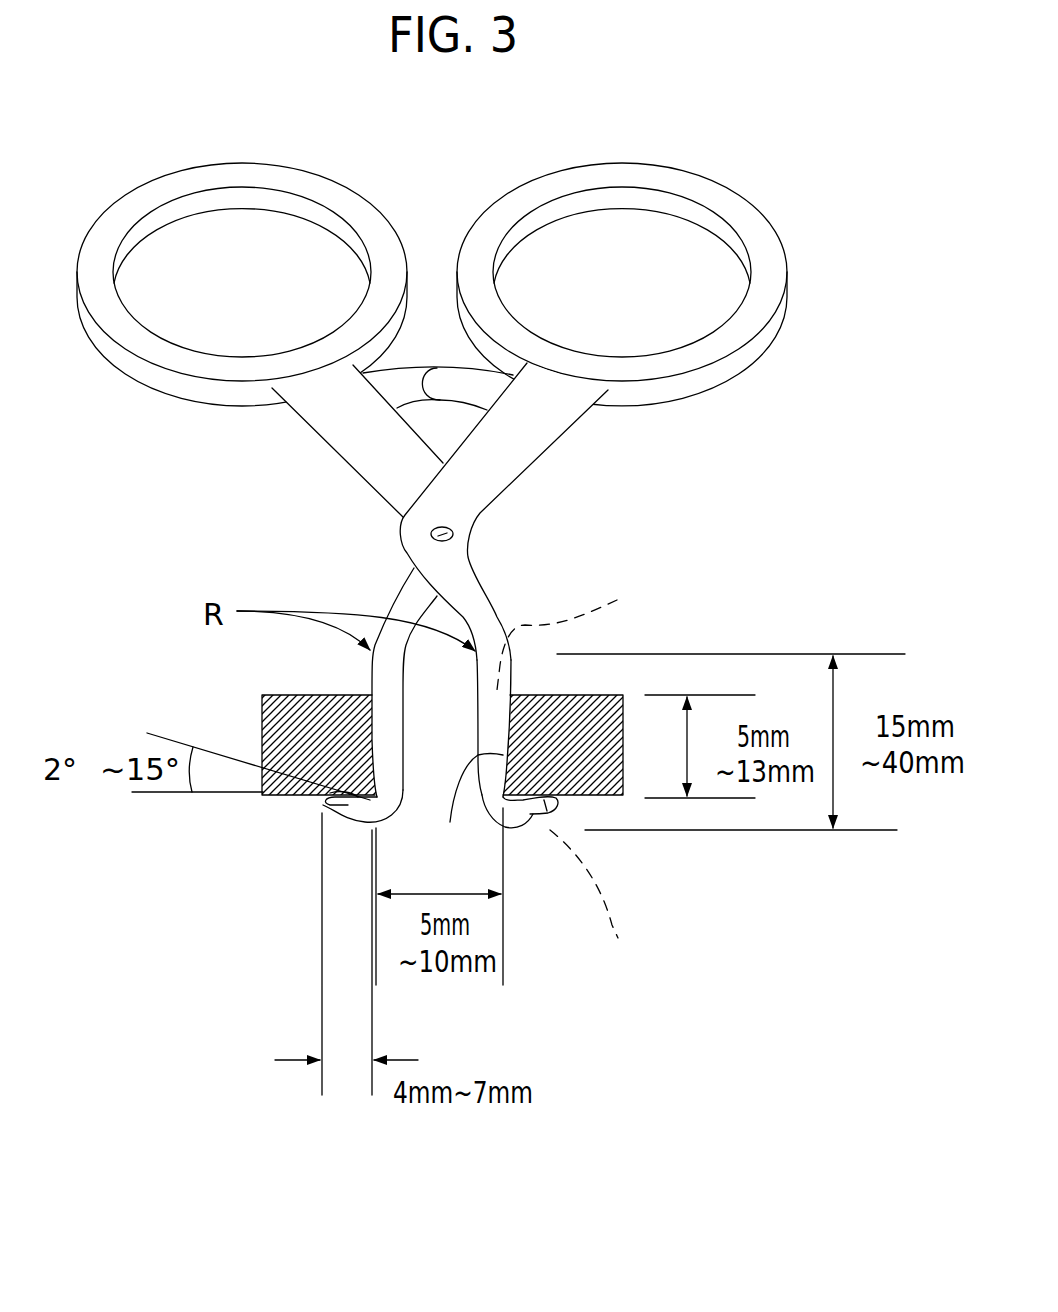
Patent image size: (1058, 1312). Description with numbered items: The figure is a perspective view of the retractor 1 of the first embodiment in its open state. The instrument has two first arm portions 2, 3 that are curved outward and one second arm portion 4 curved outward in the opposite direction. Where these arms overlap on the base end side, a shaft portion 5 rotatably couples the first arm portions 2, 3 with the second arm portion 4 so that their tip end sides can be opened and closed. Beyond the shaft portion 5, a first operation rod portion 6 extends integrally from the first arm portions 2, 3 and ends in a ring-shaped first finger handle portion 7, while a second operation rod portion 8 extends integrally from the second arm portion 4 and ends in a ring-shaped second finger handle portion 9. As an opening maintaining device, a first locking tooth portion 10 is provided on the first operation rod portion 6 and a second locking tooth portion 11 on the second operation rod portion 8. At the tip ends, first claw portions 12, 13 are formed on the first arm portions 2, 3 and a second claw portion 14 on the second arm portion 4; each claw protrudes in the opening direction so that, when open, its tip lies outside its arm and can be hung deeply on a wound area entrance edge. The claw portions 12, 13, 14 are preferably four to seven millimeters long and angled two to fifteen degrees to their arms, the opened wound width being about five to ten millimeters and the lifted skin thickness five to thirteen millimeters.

The retractor 1 is at (208, 495).
The first arm portion 2 is at (503, 680).
The first arm portion 3 is at (572, 633).
The second arm portion 4 is at (370, 680).
The shaft portion 5 is at (455, 531).
The first operation rod portion 6 is at (500, 458).
The first finger handle portion 7 is at (677, 180).
The second operation rod portion 8 is at (377, 457).
The second finger handle portion 9 is at (200, 180).
The first locking tooth portion 10 is at (472, 388).
The second locking tooth portion 11 is at (403, 383).
The first claw portion 12 is at (533, 815).
The first claw portion 13 is at (599, 906).
The second claw portion 14 is at (323, 805).